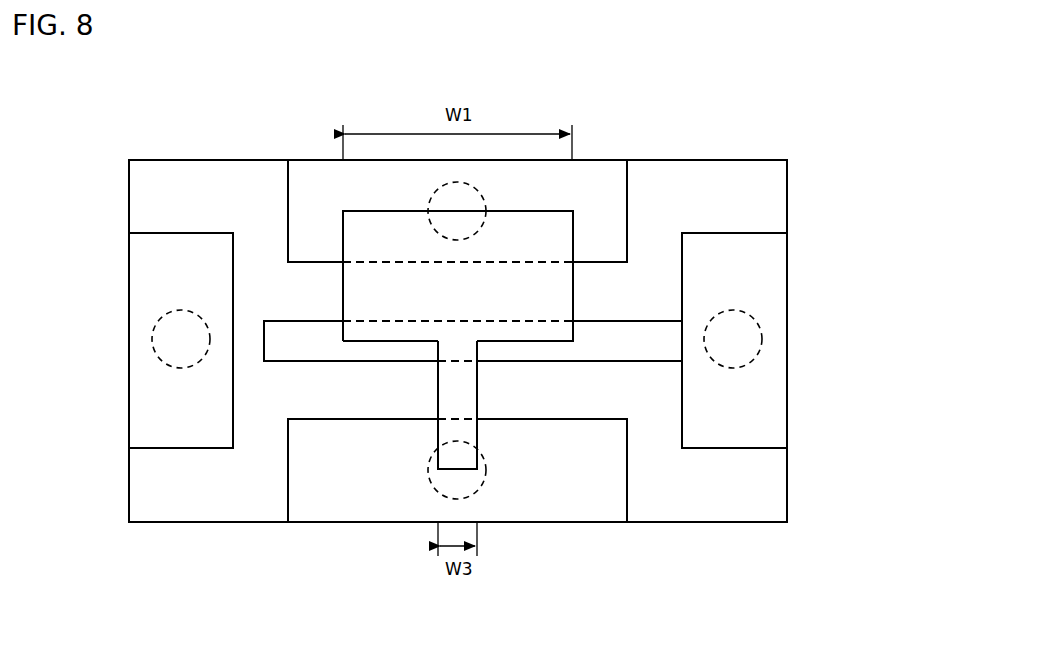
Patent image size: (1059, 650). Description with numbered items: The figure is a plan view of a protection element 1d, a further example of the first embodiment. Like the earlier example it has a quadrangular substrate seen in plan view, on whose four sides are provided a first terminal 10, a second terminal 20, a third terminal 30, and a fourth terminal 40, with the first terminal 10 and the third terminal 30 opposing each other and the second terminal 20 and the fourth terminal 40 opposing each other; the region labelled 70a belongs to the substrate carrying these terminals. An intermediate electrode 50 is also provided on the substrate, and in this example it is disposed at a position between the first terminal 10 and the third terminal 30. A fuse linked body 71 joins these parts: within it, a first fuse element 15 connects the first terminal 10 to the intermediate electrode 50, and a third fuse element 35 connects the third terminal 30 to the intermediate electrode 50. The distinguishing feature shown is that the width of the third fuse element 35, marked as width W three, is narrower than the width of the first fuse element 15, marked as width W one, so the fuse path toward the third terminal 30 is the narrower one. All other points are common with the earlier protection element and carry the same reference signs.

The first terminal 10 is at (298, 158).
The protection element 1d is at (764, 118).
The first fuse element 15 is at (560, 245).
The fuse linked body 71 is at (563, 315).
The upper surface region 70a is at (775, 188).
The second terminal 20 is at (790, 268).
The fourth terminal 40 is at (126, 418).
The third terminal 30 is at (592, 527).
The third fuse element 35 is at (440, 426).
The intermediate electrode 50 is at (653, 352).